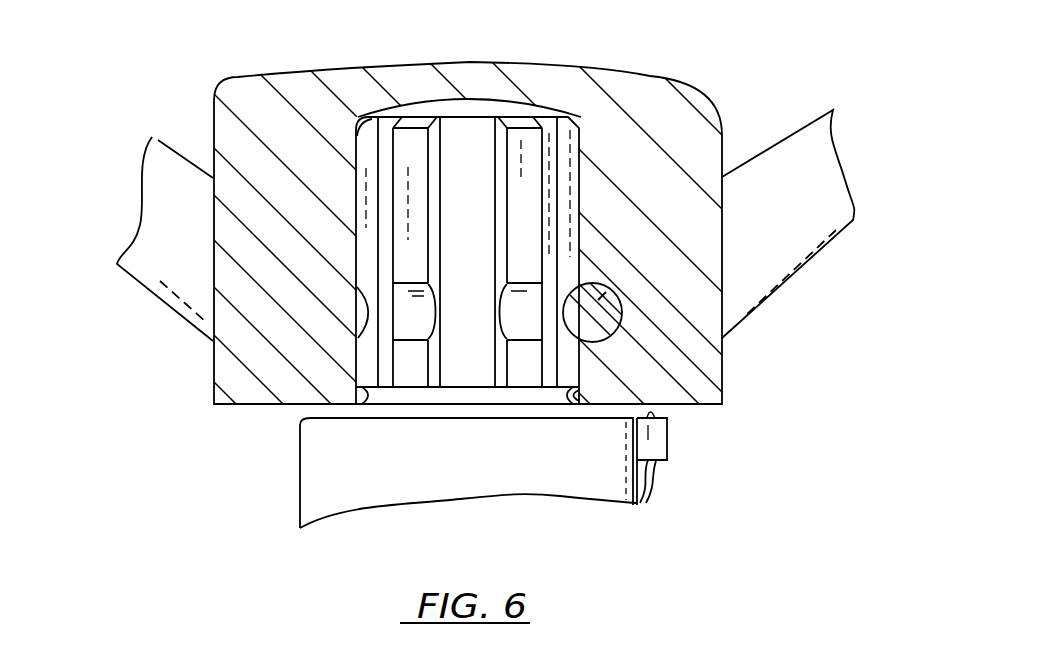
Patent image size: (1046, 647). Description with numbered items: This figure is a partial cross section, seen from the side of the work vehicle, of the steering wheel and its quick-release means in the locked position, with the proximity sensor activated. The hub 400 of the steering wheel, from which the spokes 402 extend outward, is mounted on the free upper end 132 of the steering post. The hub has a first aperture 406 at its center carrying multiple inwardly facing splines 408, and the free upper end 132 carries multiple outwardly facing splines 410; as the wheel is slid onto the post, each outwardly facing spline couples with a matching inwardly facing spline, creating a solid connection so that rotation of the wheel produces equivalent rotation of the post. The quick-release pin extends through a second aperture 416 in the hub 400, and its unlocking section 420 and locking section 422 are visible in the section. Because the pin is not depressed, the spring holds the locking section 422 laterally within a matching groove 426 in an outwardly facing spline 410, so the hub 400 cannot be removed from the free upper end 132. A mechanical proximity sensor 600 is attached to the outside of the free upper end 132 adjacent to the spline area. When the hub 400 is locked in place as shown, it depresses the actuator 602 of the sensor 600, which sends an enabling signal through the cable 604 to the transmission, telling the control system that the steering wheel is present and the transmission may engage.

The hub 400 is at (687, 82).
The spokes 402 is at (161, 140).
The first aperture 406 is at (367, 115).
The inwardly facing splines 408 is at (358, 198).
The outwardly facing splines 410 is at (568, 130).
The free upper end 132 is at (458, 113).
The second aperture 416 is at (600, 288).
The unlocking section 420 is at (627, 308).
The locking section 422 is at (605, 325).
The groove 426 is at (413, 313).
The mechanical proximity sensor 600 is at (683, 443).
The actuator 602 is at (657, 412).
The cable 604 is at (650, 474).